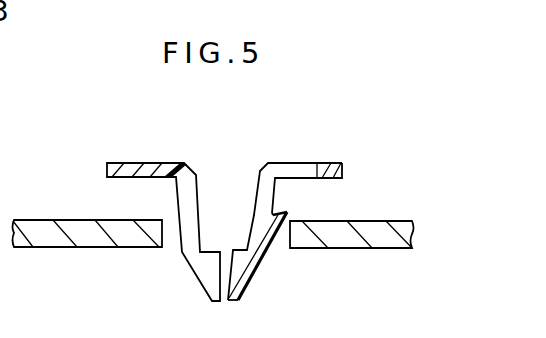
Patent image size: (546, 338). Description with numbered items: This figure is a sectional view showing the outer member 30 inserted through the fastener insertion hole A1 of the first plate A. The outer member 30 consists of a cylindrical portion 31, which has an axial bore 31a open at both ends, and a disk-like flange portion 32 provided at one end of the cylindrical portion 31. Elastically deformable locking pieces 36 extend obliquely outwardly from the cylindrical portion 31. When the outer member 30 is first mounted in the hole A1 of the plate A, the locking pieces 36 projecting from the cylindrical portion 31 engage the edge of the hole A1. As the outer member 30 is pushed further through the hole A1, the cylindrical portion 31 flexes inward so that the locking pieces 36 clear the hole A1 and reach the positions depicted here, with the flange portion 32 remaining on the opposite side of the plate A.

The outer member 30 is at (232, 200).
The cylindrical portion 31 is at (185, 255).
The axial bore 31a is at (276, 213).
The flange portion 32 is at (128, 167).
The locking piece 36 is at (272, 220).
The first plate A is at (370, 227).
The fastener insertion hole A1 is at (287, 243).